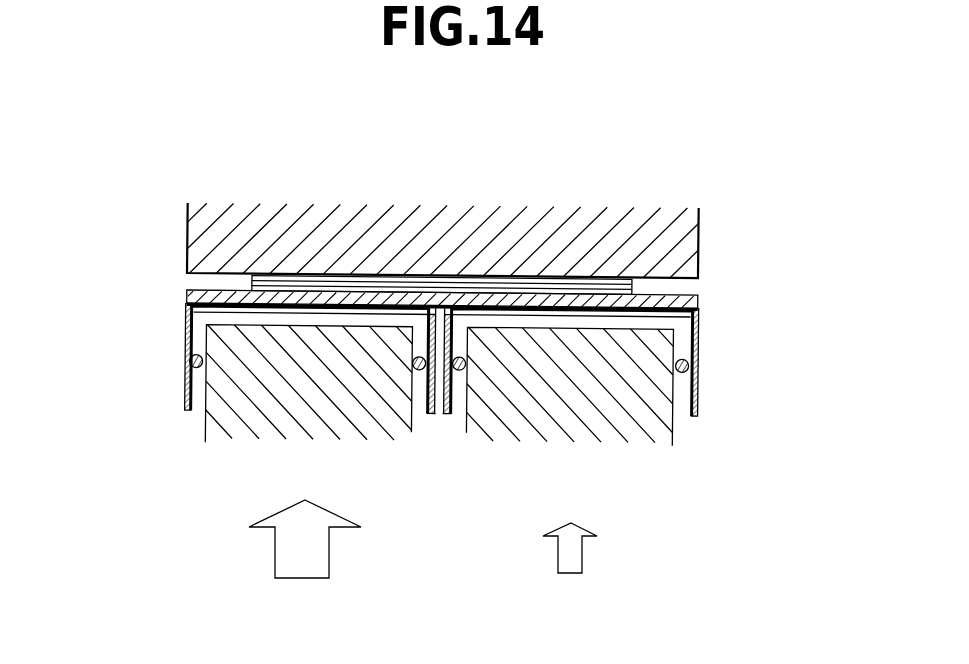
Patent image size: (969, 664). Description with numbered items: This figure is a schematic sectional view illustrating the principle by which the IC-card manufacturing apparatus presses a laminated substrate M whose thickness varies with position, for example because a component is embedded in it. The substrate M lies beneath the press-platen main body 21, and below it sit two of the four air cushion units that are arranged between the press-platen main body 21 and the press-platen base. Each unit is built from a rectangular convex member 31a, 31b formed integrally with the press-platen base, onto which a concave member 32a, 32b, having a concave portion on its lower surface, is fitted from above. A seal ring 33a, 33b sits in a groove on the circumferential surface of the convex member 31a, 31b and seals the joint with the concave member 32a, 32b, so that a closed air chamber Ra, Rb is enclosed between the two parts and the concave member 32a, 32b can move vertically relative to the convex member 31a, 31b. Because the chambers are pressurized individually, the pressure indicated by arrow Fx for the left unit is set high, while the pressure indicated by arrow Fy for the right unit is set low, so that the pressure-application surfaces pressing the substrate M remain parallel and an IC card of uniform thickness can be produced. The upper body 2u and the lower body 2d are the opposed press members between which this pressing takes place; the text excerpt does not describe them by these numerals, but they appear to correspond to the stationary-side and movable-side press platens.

The upper die 2u is at (737, 229).
The lower die 2d is at (517, 413).
The laminated substrate M is at (558, 276).
The press-platen main body 21 is at (189, 297).
The closed air chamber Ra is at (198, 322).
The closed air chamber Rb is at (700, 322).
The concave member 32a is at (190, 349).
The concave member 32b is at (697, 336).
The seal ring 33a is at (197, 369).
The seal ring 33b is at (684, 373).
The rectangular convex member 31a is at (414, 432).
The rectangular convex member 31b is at (470, 432).
The arrow indicating pressure of air cushion unit 30a (30d) Fx is at (329, 557).
The arrow indicating pressure of air cushion unit 30b (30c) Fy is at (582, 562).